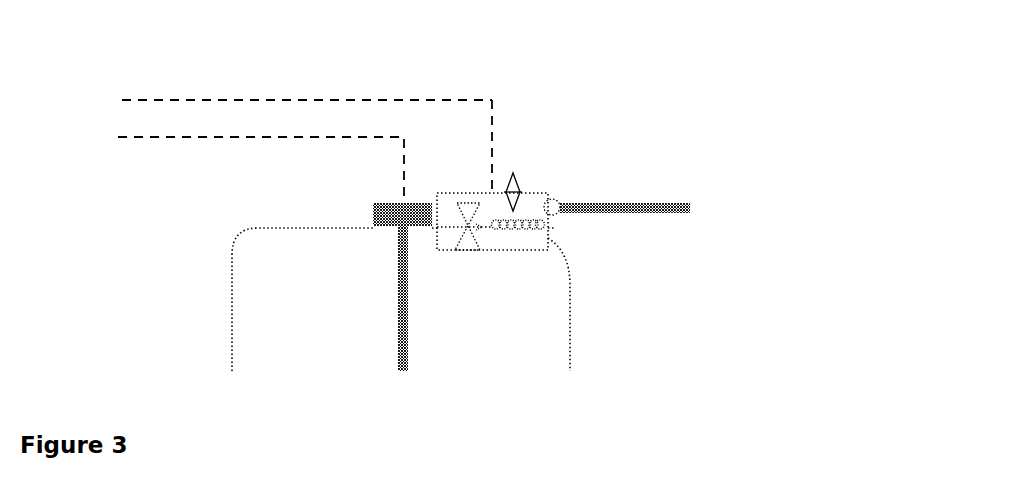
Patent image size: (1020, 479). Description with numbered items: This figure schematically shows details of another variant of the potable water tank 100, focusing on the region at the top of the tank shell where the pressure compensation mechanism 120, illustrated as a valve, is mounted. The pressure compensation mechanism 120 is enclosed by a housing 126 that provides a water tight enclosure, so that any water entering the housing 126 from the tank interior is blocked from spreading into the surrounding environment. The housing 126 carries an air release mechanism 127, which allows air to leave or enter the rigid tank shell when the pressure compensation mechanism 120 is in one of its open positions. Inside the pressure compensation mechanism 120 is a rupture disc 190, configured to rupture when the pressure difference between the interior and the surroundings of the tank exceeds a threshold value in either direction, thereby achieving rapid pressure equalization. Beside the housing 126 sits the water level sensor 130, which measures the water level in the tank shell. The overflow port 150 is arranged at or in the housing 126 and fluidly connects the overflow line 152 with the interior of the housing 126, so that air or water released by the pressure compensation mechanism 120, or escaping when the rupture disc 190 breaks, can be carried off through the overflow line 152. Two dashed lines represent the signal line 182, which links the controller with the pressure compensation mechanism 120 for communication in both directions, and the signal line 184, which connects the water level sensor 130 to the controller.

The potable water tank 100 is at (623, 178).
The pressure compensation mechanism 120 is at (458, 195).
The housing 126 is at (479, 198).
The air release mechanism 127 is at (517, 170).
The water level sensor 130 is at (385, 203).
The overflow port 150 is at (553, 200).
The overflow line 152 is at (600, 203).
The signal line 182 is at (207, 100).
The signal line 184 is at (144, 137).
The rupture disc 190 is at (545, 223).